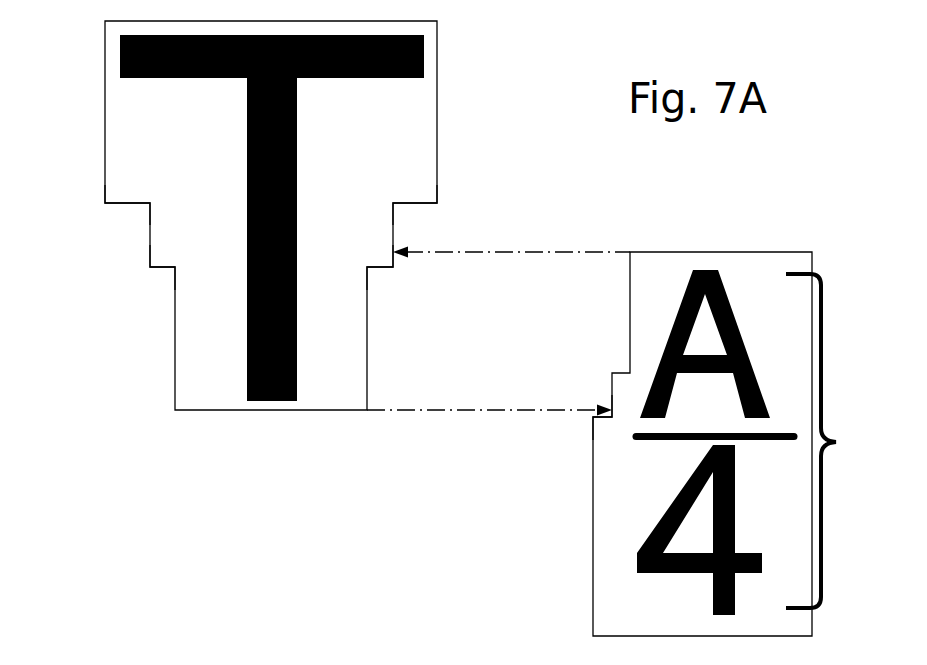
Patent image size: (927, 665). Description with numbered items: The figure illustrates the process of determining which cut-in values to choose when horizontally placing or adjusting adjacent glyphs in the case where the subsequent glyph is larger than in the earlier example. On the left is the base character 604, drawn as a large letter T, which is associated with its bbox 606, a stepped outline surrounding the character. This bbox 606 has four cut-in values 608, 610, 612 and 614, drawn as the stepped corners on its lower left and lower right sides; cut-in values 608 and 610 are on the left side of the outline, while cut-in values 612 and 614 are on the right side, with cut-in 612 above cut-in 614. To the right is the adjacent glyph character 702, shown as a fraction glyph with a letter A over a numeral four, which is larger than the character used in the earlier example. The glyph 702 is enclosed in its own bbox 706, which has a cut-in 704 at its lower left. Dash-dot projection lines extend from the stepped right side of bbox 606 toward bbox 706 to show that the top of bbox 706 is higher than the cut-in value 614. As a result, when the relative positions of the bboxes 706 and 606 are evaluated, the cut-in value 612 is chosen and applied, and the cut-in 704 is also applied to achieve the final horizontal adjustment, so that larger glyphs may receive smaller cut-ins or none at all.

The base character 604 is at (120, 59).
The bbox 606 is at (105, 153).
The cut-in value 608 is at (126, 215).
The cut-in value 610 is at (152, 279).
The cut-in value 612 is at (418, 209).
The cut-in value 614 is at (378, 280).
The adjacent glyph character 702 is at (764, 442).
The cut-in 704 is at (607, 425).
The bbox 706 is at (708, 252).